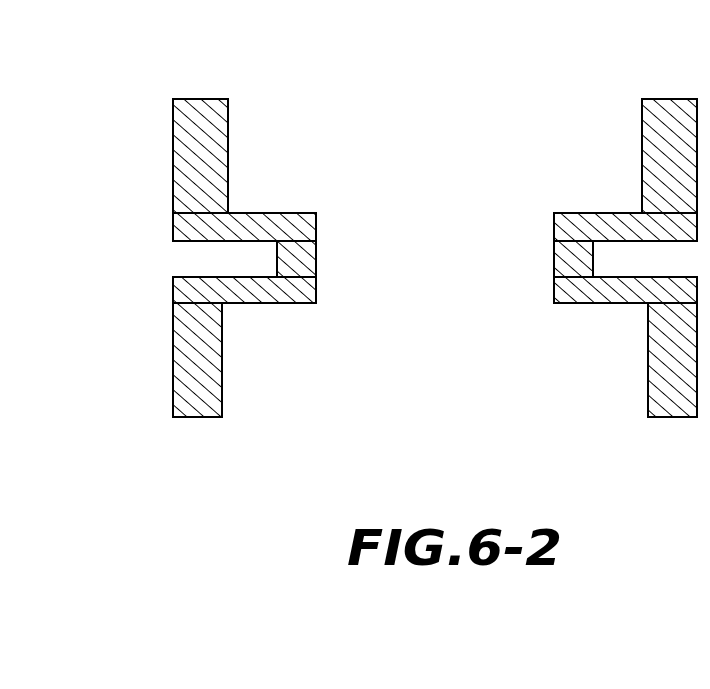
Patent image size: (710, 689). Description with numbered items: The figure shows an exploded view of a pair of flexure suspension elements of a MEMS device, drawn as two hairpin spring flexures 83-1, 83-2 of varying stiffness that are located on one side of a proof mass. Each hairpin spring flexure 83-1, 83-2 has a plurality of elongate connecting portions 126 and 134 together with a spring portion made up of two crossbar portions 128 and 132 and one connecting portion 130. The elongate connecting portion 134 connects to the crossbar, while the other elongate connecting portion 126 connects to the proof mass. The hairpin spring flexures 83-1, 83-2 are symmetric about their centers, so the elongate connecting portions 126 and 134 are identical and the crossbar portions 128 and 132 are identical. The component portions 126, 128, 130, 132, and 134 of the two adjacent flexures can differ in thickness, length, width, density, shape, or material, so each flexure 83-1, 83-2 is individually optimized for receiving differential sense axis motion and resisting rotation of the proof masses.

The hairpin spring flexure 83-1 is at (281, 219).
The hairpin spring flexure 83-2 is at (600, 71).
The elongate connecting portion 126 is at (228, 133).
The crossbar portion 128 is at (316, 224).
The connecting portion 130 is at (316, 262).
The crossbar portion 132 is at (316, 289).
The elongate connecting portion 134 is at (222, 391).